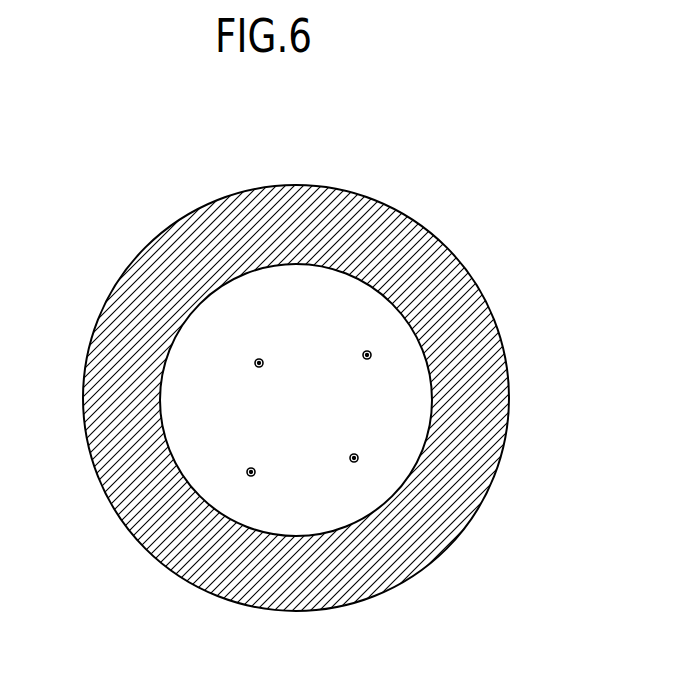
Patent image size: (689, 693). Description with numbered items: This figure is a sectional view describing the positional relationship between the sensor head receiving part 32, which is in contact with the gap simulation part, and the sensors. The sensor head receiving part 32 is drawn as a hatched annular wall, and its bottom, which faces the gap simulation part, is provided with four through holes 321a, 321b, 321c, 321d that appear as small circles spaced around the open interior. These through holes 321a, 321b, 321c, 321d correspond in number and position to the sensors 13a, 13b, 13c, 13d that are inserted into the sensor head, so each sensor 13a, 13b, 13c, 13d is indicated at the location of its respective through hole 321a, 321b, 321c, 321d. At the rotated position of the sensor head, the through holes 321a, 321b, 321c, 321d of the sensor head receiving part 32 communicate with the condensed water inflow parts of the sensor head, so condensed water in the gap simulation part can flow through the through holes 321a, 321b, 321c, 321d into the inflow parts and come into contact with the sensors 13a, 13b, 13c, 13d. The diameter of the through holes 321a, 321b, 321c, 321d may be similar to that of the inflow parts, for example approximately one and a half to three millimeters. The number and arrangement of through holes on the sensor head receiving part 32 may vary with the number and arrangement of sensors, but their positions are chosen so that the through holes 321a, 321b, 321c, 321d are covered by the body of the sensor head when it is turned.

The sensor head receiving part 32 is at (400, 258).
The through hole 321a is at (260, 360).
The through hole 321b is at (370, 354).
The through hole 321c is at (253, 476).
The through hole 321d is at (357, 461).
The sensor 13a is at (259, 360).
The sensor 13b is at (368, 352).
The sensor 13c is at (250, 471).
The sensor 13d is at (358, 458).